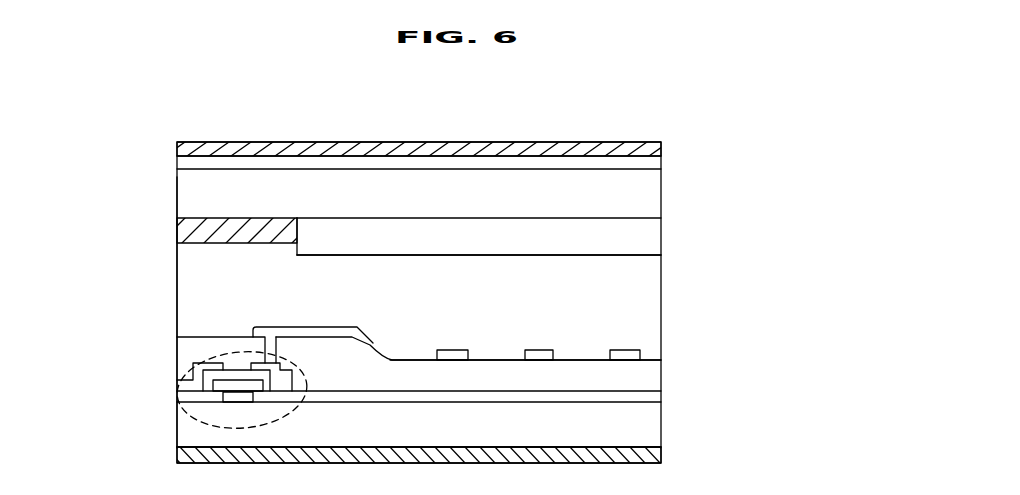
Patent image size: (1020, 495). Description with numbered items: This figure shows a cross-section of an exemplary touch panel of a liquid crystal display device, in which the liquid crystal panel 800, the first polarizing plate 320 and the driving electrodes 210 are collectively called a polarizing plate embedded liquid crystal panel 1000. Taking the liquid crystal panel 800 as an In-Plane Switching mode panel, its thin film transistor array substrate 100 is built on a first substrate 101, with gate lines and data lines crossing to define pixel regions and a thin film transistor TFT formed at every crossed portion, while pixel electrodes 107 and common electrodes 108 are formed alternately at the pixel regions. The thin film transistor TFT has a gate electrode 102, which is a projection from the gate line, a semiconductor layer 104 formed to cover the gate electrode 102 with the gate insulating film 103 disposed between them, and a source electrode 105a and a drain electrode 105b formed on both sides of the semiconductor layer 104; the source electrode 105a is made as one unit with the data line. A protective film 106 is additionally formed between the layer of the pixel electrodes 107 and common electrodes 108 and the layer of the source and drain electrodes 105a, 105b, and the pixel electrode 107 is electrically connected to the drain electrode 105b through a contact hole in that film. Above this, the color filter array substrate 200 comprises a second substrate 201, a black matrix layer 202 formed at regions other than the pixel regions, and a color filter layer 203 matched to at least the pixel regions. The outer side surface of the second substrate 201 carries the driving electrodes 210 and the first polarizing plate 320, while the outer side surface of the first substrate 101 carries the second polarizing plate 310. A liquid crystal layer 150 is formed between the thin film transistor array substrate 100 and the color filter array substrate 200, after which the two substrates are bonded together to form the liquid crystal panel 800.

The polarizing plate embedded liquid crystal panel 1000 is at (791, 147).
The liquid crystal panel 800 is at (99, 177).
The color filter array substrate 200 is at (734, 175).
The thin film transistor array substrate 100 is at (736, 345).
The first polarizing plate 320 is at (661, 152).
The driving electrodes 210 is at (661, 163).
The second substrate 201 is at (661, 200).
The black matrix layer 202 is at (177, 231).
The color filter layer 203 is at (661, 238).
The liquid crystal layer 150 is at (661, 276).
The protective film 106 is at (661, 373).
The pixel electrodes 107 is at (310, 326).
The common electrodes 108 is at (453, 350).
The gate insulating film 103 is at (661, 397).
The first substrate 101 is at (661, 428).
The second polarizing plate 310 is at (661, 455).
The gate electrode 102 is at (238, 398).
The semiconductor layer 104 is at (240, 370).
The source electrode 105a is at (177, 384).
The drain electrode 105b is at (283, 364).
The thin film transistor TFT is at (288, 418).